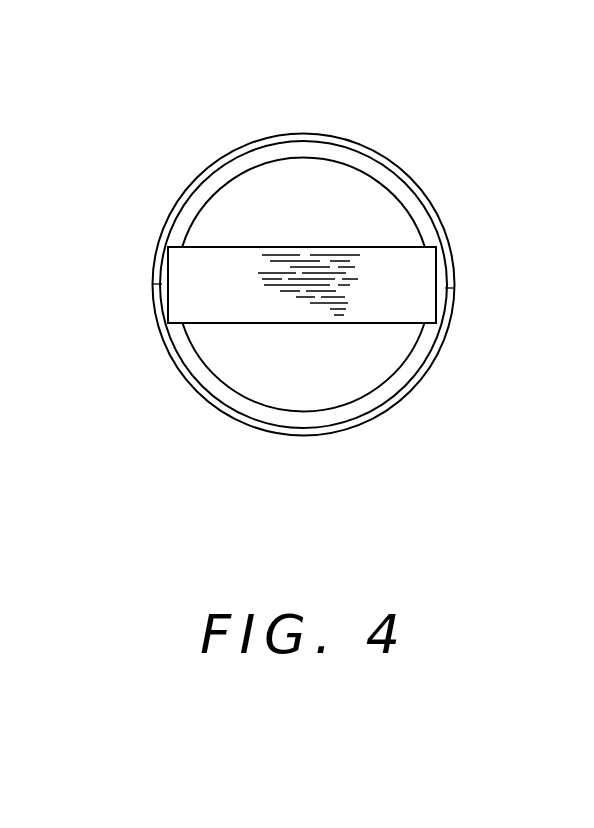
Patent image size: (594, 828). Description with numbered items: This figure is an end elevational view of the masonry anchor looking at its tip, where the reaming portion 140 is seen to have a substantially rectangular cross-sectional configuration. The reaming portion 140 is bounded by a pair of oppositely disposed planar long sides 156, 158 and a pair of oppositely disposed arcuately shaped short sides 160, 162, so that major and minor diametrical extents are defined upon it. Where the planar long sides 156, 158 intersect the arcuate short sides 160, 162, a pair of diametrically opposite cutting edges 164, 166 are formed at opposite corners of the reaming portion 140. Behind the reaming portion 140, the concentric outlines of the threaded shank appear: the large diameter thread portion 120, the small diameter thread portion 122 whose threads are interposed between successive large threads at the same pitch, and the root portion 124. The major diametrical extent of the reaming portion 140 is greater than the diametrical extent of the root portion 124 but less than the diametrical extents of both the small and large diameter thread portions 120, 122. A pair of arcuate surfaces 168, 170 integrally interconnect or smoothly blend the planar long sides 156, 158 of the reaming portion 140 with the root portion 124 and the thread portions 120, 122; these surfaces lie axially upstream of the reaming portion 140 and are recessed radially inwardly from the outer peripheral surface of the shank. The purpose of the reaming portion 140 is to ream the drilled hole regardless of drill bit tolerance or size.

The large diameter thread portion 120 is at (401, 170).
The small diameter thread portion 122 is at (218, 163).
The root portion 124 is at (304, 160).
The reaming portion 140 is at (315, 288).
The planar long side 156 is at (320, 247).
The planar long side 158 is at (242, 324).
The arcuately shaped short side 160 is at (455, 288).
The arcuately shaped short side 162 is at (152, 284).
The cutting edge 164 is at (433, 247).
The cutting edge 166 is at (168, 323).
The arcuate surface 168 is at (348, 180).
The arcuate surface 170 is at (307, 382).